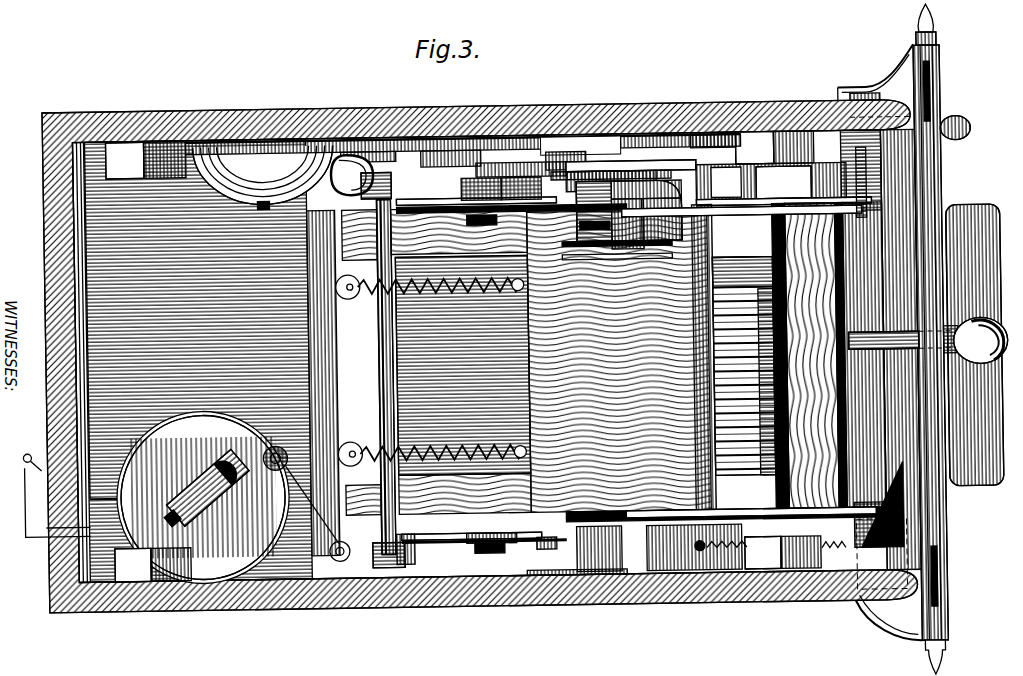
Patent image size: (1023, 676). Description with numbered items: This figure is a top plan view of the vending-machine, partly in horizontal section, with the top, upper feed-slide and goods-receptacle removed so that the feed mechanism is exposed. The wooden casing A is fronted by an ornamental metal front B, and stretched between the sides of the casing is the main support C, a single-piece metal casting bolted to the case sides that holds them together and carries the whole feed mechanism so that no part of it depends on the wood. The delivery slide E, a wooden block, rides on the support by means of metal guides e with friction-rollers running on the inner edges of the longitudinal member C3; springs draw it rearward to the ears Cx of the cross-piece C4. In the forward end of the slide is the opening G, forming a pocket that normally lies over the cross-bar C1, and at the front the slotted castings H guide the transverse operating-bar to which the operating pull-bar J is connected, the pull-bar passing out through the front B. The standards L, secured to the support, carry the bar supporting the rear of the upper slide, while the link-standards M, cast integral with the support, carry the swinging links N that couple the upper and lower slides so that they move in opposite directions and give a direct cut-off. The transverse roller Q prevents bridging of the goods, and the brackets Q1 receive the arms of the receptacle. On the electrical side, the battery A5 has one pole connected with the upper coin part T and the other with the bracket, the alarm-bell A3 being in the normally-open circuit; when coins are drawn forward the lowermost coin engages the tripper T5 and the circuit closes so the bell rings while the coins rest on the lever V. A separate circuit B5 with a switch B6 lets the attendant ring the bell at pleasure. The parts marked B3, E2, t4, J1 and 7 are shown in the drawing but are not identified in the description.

The casing A is at (194, 361).
The alarm-bell A3 is at (263, 177).
The battery A5 is at (175, 490).
The ornamental metal front B is at (940, 540).
The frame bracket B3 is at (862, 175).
The separate circuit B5 is at (53, 502).
The switch B6 is at (28, 451).
The main support C is at (597, 389).
The cross-bar C1 is at (765, 500).
The longitudinal member C3 is at (699, 368).
The cross-piece C4 is at (358, 378).
The ears Cx is at (427, 365).
The delivery slide E is at (591, 386).
The block strip E2 is at (822, 360).
The metal guides e is at (514, 378).
The opening G is at (745, 290).
The slotted castings H is at (800, 523).
The operating pull-bar J is at (890, 365).
The knob J1 is at (993, 338).
The standards L is at (619, 372).
The link-standards M is at (485, 234).
The swinging links N is at (520, 215).
The transverse roller Q is at (459, 155).
The brackets Q1 is at (468, 559).
The upper coin part T is at (548, 148).
The rail contact t4 is at (586, 173).
The tripper T5 is at (628, 215).
The lever V is at (612, 240).
The screw 7 is at (708, 146).